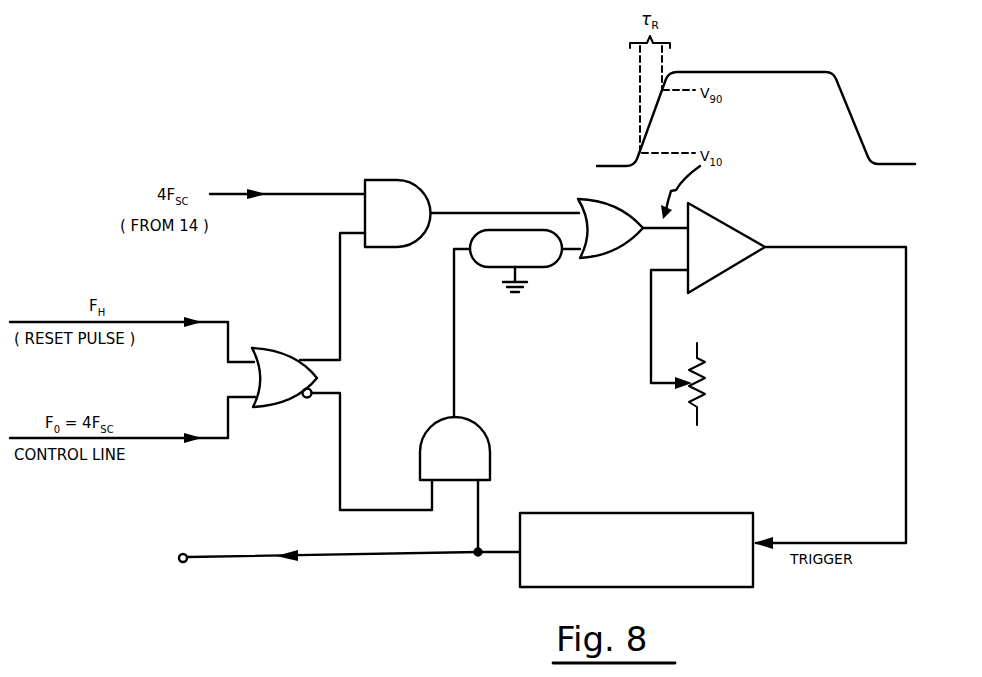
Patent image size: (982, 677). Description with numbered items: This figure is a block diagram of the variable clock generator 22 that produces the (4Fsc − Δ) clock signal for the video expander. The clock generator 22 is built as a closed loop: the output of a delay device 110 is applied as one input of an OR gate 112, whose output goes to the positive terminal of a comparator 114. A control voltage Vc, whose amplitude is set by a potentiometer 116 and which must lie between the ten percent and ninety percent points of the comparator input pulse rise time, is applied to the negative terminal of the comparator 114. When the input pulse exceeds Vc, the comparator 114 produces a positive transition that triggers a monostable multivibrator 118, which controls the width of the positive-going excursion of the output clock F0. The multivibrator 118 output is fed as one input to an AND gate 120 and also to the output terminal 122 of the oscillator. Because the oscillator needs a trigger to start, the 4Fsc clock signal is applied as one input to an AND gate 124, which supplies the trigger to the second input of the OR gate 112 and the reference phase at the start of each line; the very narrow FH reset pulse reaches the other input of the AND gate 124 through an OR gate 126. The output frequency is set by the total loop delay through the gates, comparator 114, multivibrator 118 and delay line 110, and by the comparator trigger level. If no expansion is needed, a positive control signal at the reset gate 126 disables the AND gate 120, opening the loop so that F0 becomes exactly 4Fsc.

The clock generator 22 is at (538, 356).
The delay device 110 is at (541, 270).
The OR gate 112 is at (612, 254).
The comparator 114 is at (745, 233).
The potentiometer 116 is at (683, 387).
The monostable multivibrator 118 is at (603, 512).
The AND gate 120 is at (479, 417).
The output terminal 122 is at (188, 554).
The AND gate 124 is at (405, 182).
The OR gate 126 is at (282, 348).